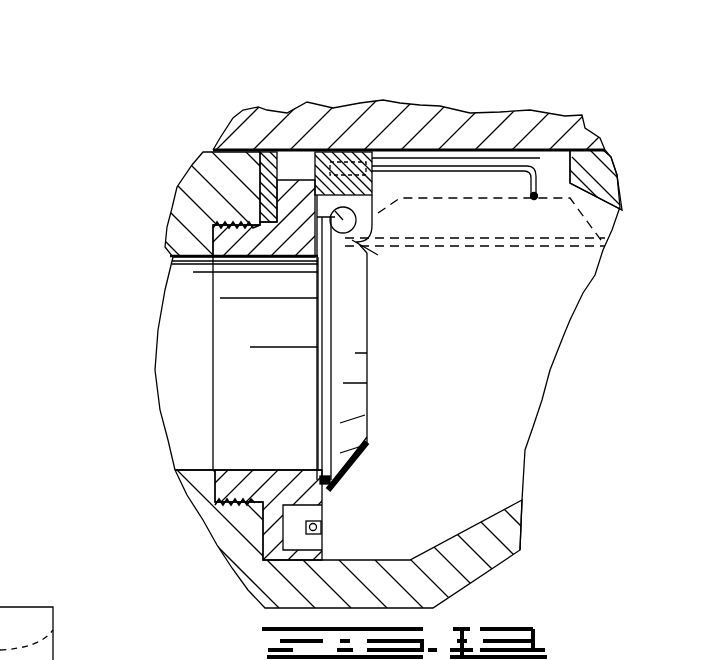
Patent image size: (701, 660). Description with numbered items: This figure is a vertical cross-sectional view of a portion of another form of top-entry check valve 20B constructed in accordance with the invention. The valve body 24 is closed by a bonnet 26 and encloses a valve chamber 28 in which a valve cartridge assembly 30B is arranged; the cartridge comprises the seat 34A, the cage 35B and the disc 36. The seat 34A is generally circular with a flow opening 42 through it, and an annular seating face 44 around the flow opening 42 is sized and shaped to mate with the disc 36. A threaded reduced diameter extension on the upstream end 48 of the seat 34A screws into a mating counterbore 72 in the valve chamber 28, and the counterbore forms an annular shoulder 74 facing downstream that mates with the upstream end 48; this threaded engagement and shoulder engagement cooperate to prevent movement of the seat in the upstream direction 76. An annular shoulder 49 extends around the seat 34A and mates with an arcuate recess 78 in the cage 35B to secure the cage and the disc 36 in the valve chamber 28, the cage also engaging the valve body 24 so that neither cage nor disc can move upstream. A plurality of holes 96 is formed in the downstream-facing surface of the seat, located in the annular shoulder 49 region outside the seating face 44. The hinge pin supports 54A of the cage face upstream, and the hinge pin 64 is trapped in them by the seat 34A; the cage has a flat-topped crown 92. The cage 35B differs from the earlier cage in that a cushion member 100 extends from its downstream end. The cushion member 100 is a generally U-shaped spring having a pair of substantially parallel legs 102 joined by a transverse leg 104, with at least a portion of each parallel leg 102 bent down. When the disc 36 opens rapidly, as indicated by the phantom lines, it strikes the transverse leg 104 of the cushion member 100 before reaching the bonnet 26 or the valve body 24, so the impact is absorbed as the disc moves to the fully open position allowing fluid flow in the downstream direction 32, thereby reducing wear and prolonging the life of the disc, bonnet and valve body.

The valve 20B is at (228, 120).
The valve body 24 is at (585, 166).
The bonnet 26 is at (455, 122).
The valve chamber 28 is at (477, 452).
The valve cartridge assembly 30B is at (382, 364).
The downstream direction 32 is at (577, 350).
The seat 34A is at (240, 466).
The cage 35B is at (352, 146).
The disc 36 is at (370, 322).
The flow opening 42 is at (215, 308).
The seating face 44 is at (352, 473).
The upstream end 48 is at (253, 330).
The annular shoulder 49 is at (288, 199).
The hinge pin supports 54A is at (372, 225).
The hinge pin 64 is at (322, 175).
The mating counterbore 72 is at (252, 507).
The annular shoulder 74 is at (215, 492).
The upstream direction 76 is at (180, 358).
The arcuate recess 78 is at (297, 150).
The flat-topped crown 92 is at (343, 166).
The holes 96 is at (325, 528).
The cushion member 100 is at (545, 180).
The parallel legs 102 is at (490, 160).
The transverse leg 104 is at (585, 160).